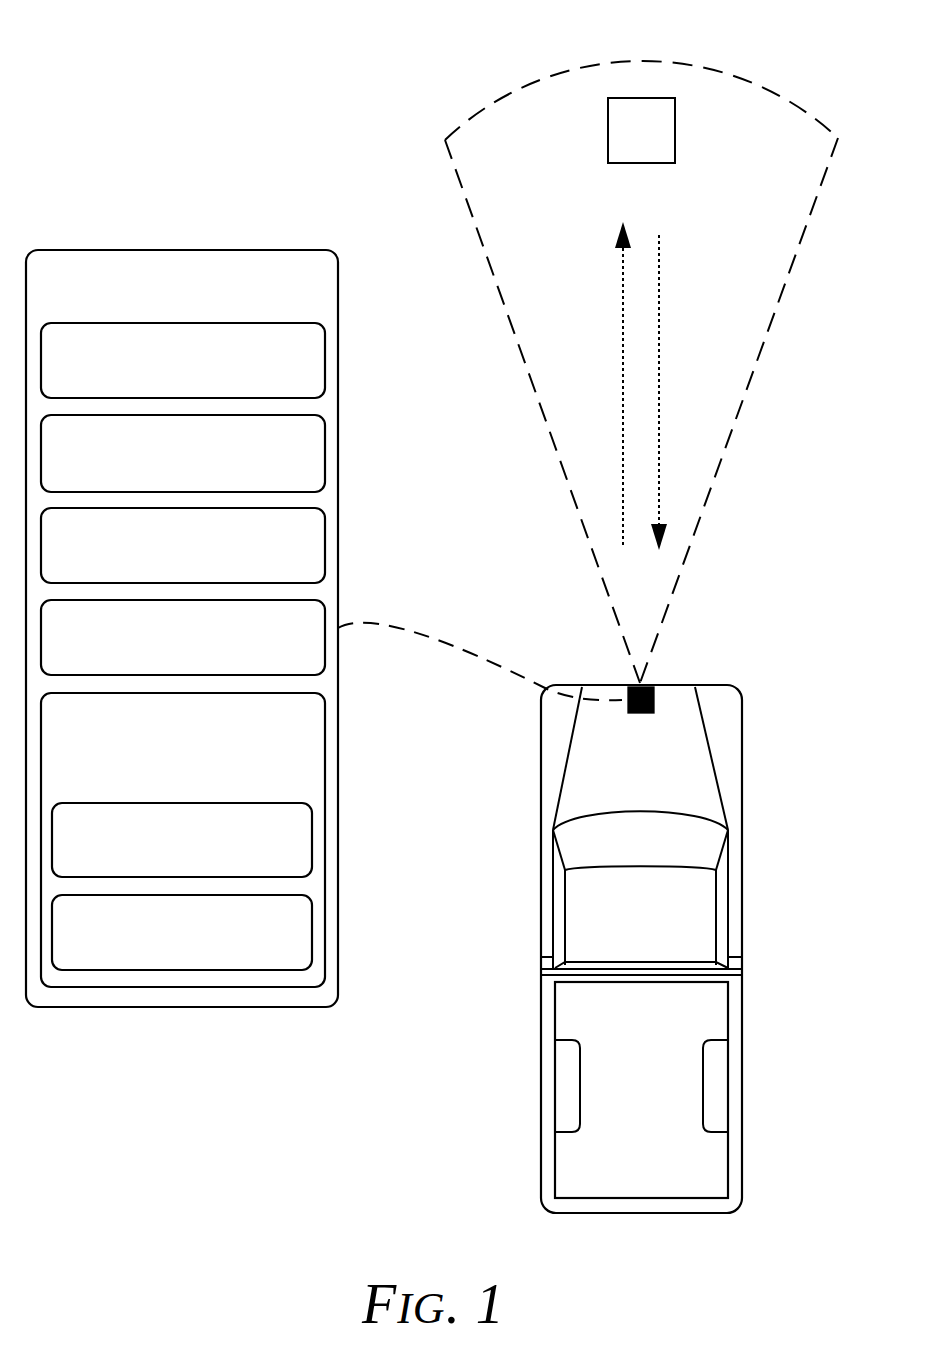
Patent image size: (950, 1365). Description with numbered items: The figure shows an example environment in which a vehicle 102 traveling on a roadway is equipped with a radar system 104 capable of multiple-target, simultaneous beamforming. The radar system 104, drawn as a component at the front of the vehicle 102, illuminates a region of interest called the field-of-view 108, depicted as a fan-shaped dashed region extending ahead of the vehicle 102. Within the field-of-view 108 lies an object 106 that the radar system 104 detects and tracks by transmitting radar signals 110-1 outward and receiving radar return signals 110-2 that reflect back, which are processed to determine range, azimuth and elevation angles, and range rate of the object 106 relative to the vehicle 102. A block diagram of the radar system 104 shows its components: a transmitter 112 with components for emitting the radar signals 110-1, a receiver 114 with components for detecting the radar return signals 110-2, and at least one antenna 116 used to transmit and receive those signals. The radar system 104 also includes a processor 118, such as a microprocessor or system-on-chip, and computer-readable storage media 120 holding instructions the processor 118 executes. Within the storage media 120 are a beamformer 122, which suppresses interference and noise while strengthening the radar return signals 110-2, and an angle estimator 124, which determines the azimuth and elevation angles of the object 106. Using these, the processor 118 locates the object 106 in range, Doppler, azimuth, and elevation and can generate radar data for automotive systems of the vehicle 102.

The vehicle 102 is at (742, 1113).
The radar system 104 is at (163, 314).
The object 106 is at (675, 130).
The field-of-view 108 is at (517, 350).
The radar signals 110-1 is at (622, 312).
The radar return signals 110-2 is at (660, 315).
The transmitter 112 is at (163, 387).
The receiver 114 is at (163, 481).
The antenna 116 is at (163, 576).
The processor 118 is at (163, 666).
The computer-readable storage media 120 is at (163, 787).
The beamformer 122 is at (163, 869).
The angle estimator 124 is at (163, 961).